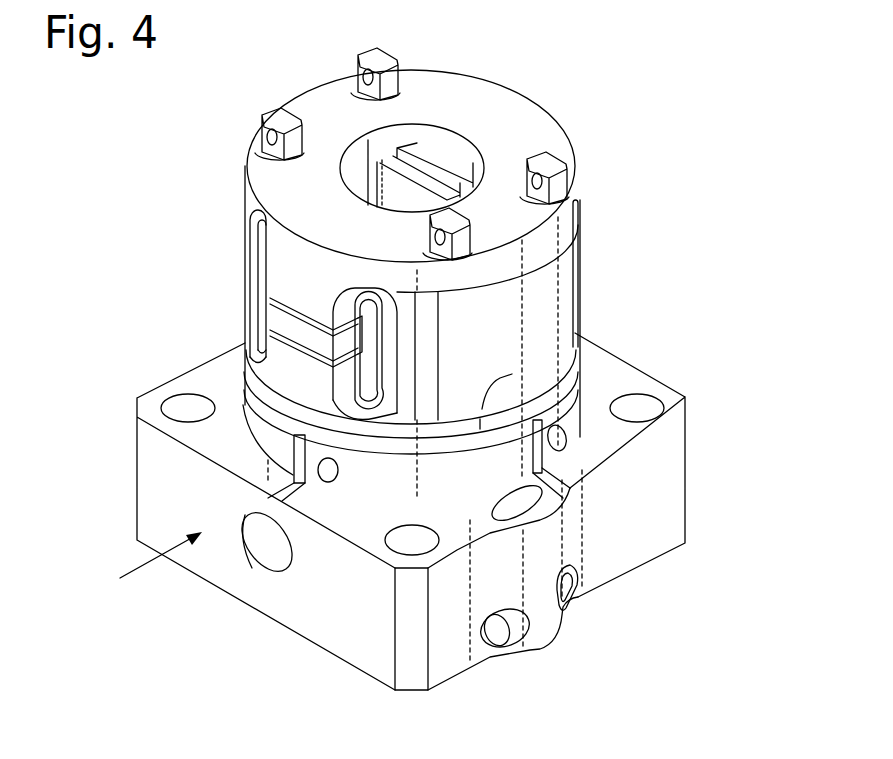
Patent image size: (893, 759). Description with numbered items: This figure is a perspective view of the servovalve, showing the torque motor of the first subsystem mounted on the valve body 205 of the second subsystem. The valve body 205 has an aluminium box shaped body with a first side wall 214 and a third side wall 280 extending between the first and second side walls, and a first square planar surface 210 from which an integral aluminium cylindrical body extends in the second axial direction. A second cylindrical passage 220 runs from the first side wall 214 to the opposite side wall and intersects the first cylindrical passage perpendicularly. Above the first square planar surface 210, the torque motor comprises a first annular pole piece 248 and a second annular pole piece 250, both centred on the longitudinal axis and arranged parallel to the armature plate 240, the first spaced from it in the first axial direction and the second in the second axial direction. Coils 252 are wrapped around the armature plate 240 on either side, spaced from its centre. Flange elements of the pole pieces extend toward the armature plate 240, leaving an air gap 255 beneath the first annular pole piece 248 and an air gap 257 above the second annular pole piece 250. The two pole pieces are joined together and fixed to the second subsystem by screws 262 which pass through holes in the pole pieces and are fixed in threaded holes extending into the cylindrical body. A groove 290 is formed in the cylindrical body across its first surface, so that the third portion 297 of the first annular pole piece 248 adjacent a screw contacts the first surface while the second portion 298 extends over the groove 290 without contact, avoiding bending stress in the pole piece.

The valve body 205 is at (708, 480).
The first square planar surface 210 is at (655, 392).
The first side wall 214 is at (338, 632).
The second cylindrical passage 220 is at (267, 553).
The armature plate 240 is at (270, 308).
The first annular pole piece 248 is at (578, 357).
The second annular pole piece 250 is at (510, 110).
The coils 252 is at (250, 247).
The air gap 255 is at (263, 270).
The air gap 257 is at (250, 335).
The screws 262 is at (360, 62).
The third side wall 280 is at (640, 550).
The groove 290 is at (287, 422).
The third portion of the pole piece 297 is at (540, 350).
The second portion of the pole piece 298 is at (262, 362).